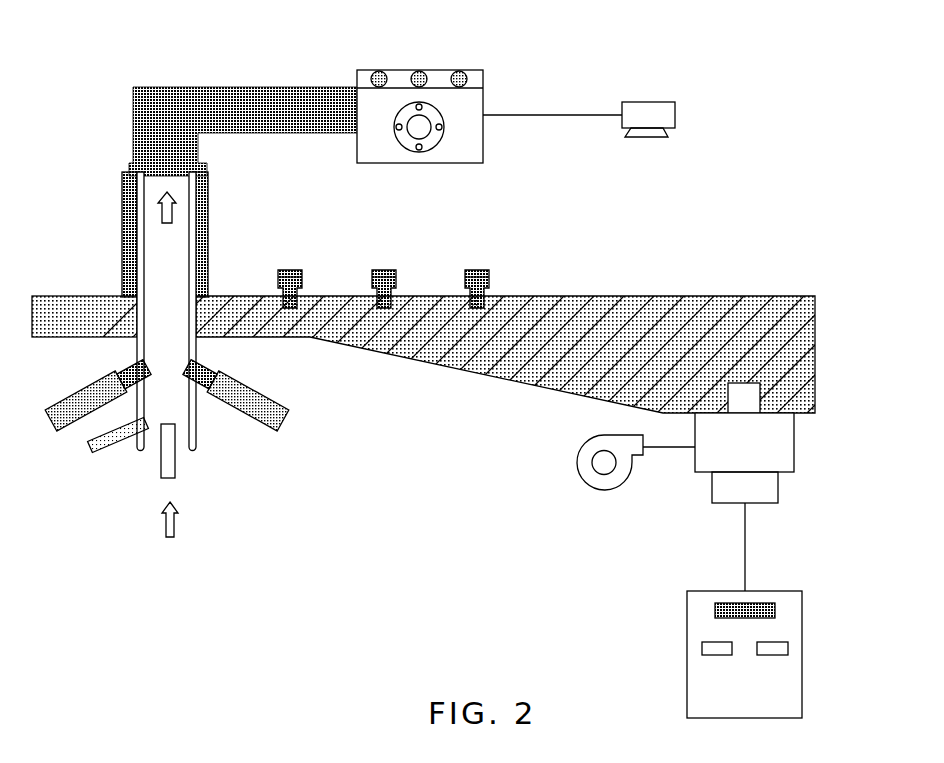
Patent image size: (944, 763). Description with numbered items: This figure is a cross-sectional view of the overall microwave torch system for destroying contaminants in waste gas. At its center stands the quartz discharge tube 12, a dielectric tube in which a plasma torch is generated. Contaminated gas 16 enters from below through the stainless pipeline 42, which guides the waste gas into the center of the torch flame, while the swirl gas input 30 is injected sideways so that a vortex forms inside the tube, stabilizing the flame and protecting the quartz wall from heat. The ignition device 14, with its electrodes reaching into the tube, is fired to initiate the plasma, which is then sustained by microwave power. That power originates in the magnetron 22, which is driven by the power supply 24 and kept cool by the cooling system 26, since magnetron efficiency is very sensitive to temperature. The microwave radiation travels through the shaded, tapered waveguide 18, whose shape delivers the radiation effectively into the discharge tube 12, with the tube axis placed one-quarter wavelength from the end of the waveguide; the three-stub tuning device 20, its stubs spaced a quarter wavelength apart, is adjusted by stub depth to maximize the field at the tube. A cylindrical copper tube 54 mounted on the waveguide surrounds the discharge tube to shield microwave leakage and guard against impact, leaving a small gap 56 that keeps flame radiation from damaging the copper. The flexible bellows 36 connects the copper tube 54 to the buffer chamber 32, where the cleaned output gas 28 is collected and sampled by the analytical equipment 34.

The discharge tube 12 is at (193, 197).
The ignition device 14 is at (278, 427).
The contaminated gas 16 is at (170, 536).
The waveguide 18 is at (589, 292).
The three-stub tuning device 20 is at (383, 262).
The magnetron 22 is at (794, 453).
The power supply 24 is at (687, 643).
The cooling system 26 is at (593, 493).
The output gas 28 is at (164, 225).
The swirl gas input 30 is at (76, 463).
The buffer chamber 32 is at (418, 57).
The analytical equipment 34 is at (657, 95).
The bellows 36 is at (180, 82).
The stainless pipeline 42 is at (180, 463).
The cylindrical copper tube 54 is at (125, 210).
The gap 56 is at (123, 261).